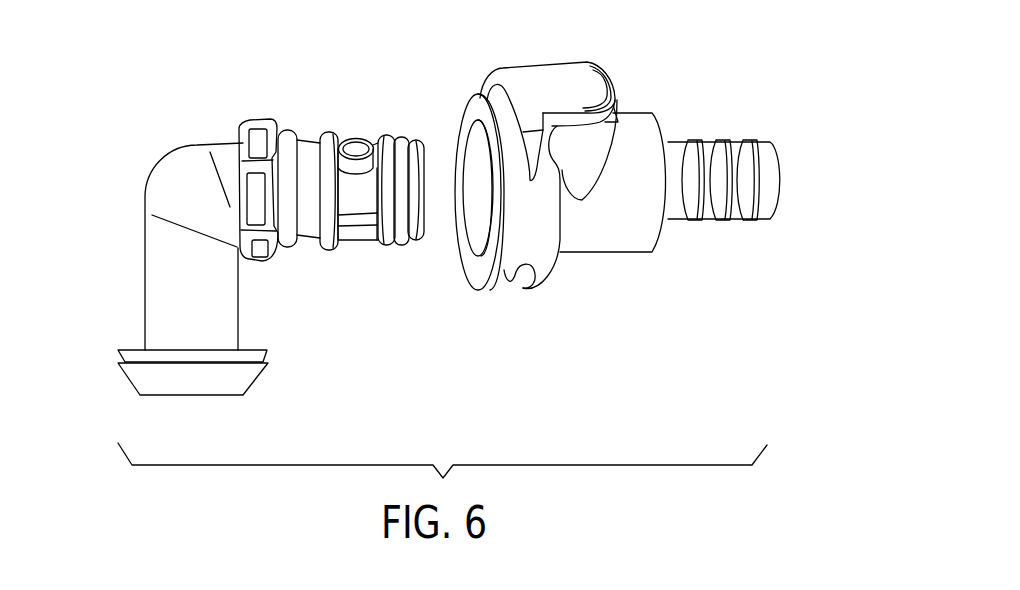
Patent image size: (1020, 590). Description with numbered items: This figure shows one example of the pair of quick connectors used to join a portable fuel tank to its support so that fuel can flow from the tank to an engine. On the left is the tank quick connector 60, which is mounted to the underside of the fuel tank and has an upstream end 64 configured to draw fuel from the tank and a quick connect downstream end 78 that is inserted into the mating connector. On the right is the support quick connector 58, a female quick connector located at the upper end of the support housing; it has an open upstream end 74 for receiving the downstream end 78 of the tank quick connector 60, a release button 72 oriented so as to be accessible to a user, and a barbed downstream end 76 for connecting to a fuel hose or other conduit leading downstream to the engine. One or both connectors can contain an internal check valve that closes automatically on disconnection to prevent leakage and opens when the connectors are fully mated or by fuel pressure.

The support quick connector 58 is at (569, 281).
The tank quick connector 60 is at (312, 272).
The upstream end 64 is at (126, 379).
The release button 72 is at (558, 80).
The open upstream end 74 is at (471, 153).
The barbed downstream end 76 is at (754, 132).
The quick connect downstream end 78 is at (417, 250).